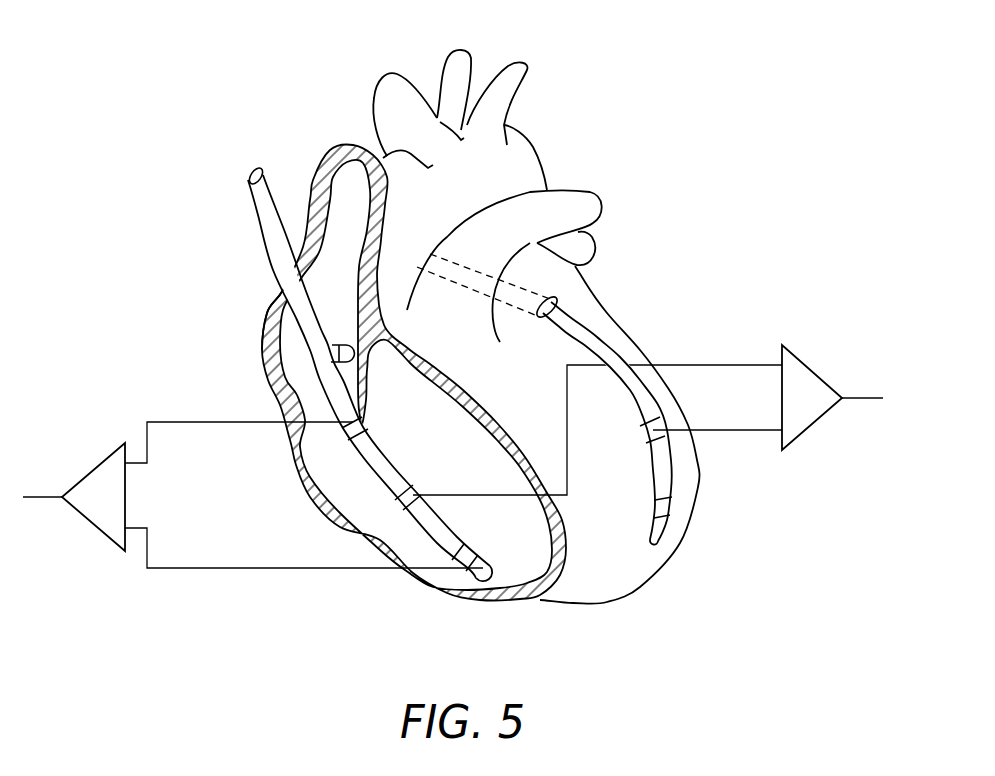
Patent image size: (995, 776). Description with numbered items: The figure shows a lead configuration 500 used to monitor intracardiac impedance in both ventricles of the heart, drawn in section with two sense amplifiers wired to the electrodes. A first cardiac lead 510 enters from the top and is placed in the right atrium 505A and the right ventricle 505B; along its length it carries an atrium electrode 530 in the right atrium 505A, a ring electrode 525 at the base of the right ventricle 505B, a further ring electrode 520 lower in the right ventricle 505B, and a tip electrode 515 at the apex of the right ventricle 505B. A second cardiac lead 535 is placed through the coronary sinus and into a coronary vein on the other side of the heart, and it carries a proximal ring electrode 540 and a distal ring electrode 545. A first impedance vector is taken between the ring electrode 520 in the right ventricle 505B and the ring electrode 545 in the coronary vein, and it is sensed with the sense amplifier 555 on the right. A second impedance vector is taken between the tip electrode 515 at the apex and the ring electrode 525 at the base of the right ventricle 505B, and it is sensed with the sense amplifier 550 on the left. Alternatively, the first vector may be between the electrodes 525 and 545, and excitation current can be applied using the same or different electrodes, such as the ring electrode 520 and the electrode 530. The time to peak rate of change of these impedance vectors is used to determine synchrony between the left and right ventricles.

The lead configuration 500 is at (721, 70).
The right atrium 505A is at (294, 378).
The right ventricle 505B is at (513, 571).
The first cardiac lead 510 is at (264, 208).
The tip electrode 515 is at (470, 590).
The ring electrode 520 is at (408, 498).
The ring electrode 525 is at (347, 430).
The atrium electrode 530 is at (334, 352).
The second cardiac lead 535 is at (590, 327).
The proximal ring electrode 540 is at (668, 507).
The distal ring electrode 545 is at (660, 426).
The sense amplifier 550 is at (92, 527).
The sense amplifier 555 is at (812, 368).